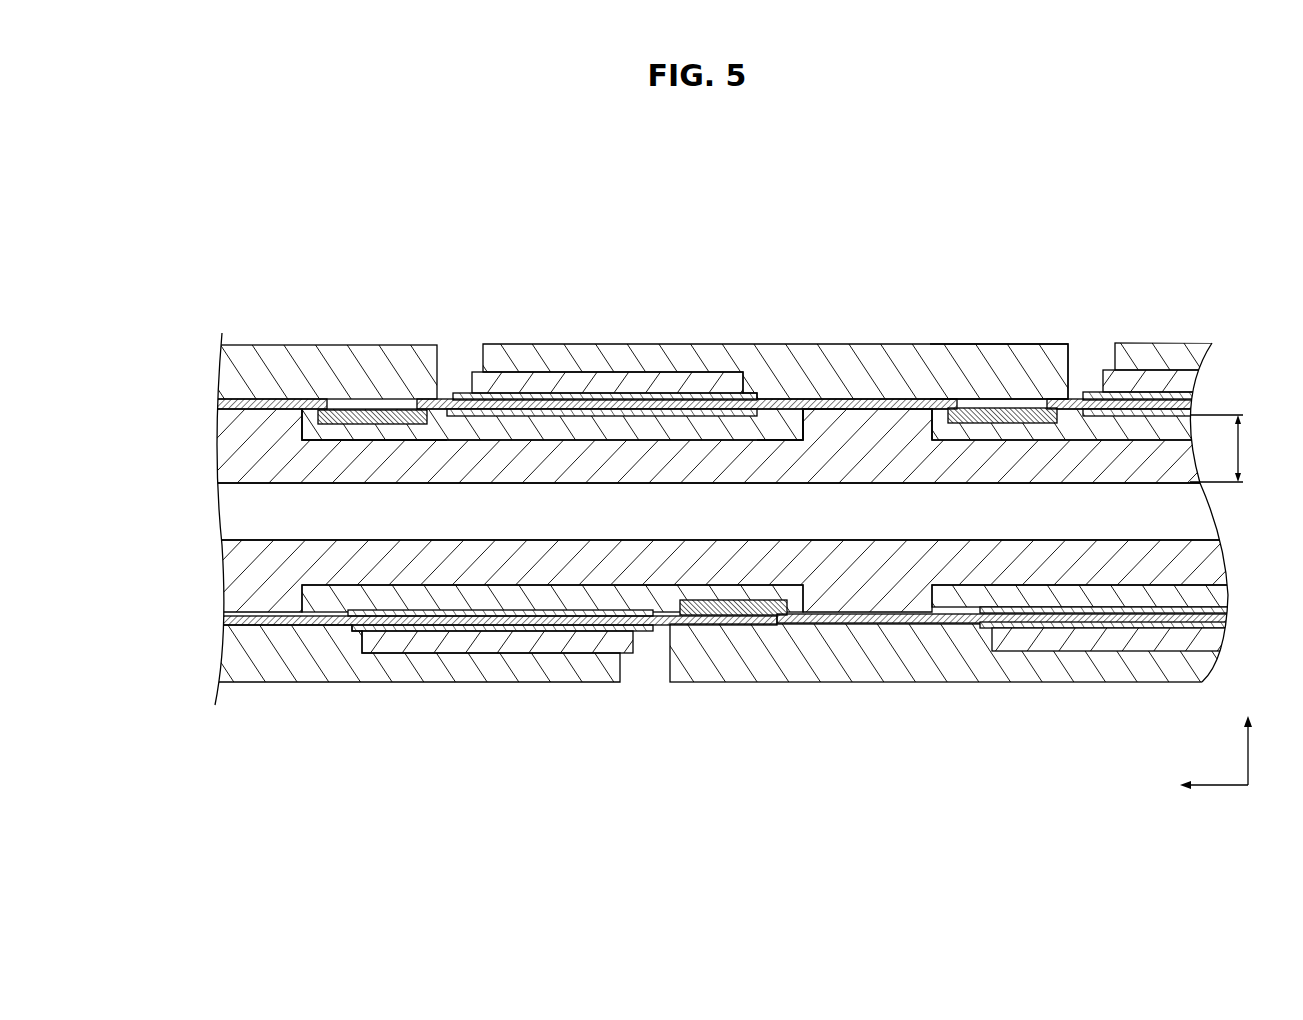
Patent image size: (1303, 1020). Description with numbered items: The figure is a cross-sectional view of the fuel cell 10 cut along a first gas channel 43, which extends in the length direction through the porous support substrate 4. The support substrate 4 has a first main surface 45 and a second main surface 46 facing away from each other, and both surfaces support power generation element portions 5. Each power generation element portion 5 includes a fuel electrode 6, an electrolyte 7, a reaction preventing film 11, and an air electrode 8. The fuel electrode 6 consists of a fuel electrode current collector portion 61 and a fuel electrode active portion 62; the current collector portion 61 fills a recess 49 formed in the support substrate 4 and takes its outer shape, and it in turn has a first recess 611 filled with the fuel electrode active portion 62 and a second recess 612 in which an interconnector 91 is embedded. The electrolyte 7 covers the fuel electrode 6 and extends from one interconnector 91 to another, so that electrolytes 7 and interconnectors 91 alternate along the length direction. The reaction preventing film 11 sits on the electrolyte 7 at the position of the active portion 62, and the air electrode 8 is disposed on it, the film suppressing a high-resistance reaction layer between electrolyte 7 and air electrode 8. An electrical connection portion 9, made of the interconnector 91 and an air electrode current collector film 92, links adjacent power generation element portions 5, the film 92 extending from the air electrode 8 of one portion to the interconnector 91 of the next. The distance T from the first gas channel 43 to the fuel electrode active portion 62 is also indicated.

The fuel cell 10 is at (881, 190).
The support substrate 4 is at (209, 465).
The first gas channel 43 is at (328, 522).
The first main surface 45 is at (240, 398).
The second main surface 46 is at (265, 627).
The recess 49 is at (773, 433).
The power generation element portion 5 is at (546, 360).
The fuel electrode 6 is at (772, 398).
The fuel electrode current collector portion 61 is at (772, 418).
The first recess 611 is at (757, 410).
The second recess 612 is at (388, 398).
The fuel electrode active portion 62 is at (465, 400).
The electrolyte 7 is at (522, 402).
The air electrode 8 is at (799, 455).
The electrical connection portion 9 is at (634, 412).
The interconnector 91 is at (352, 408).
The air electrode current collector film 92 is at (272, 358).
The reaction preventing film 11 is at (573, 393).